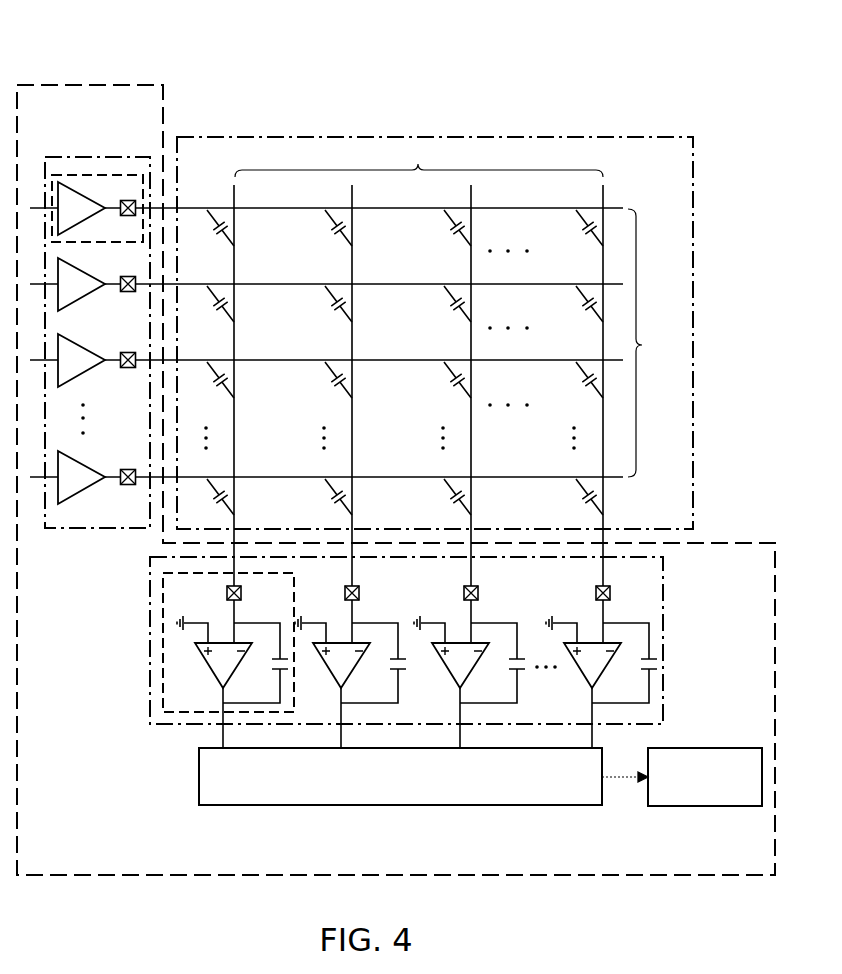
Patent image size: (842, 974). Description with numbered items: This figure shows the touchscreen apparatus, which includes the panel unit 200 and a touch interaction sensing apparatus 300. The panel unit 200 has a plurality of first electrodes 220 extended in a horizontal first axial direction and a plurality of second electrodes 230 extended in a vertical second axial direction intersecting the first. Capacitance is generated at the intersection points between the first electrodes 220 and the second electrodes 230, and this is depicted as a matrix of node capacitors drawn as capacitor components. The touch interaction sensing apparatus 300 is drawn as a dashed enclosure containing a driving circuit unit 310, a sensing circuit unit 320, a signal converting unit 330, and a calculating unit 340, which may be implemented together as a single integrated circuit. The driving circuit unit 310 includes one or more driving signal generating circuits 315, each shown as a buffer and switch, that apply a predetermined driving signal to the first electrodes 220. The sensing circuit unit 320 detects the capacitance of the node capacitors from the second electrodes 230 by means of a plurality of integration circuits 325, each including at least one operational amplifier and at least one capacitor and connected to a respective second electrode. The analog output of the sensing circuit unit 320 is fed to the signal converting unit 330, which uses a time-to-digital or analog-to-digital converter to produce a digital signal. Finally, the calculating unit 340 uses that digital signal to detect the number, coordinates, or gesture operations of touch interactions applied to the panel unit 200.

The panel unit 200 is at (435, 137).
The first electrodes 220 is at (653, 343).
The second electrodes 230 is at (419, 161).
The touch interaction sensing apparatus 300 is at (88, 85).
The driving circuit unit 310 is at (128, 157).
The driving signal generating circuit 315 is at (72, 175).
The sensing circuit unit 320 is at (150, 589).
The integration circuit 325 is at (163, 645).
The signal converting unit 330 is at (412, 806).
The calculating unit 340 is at (705, 806).